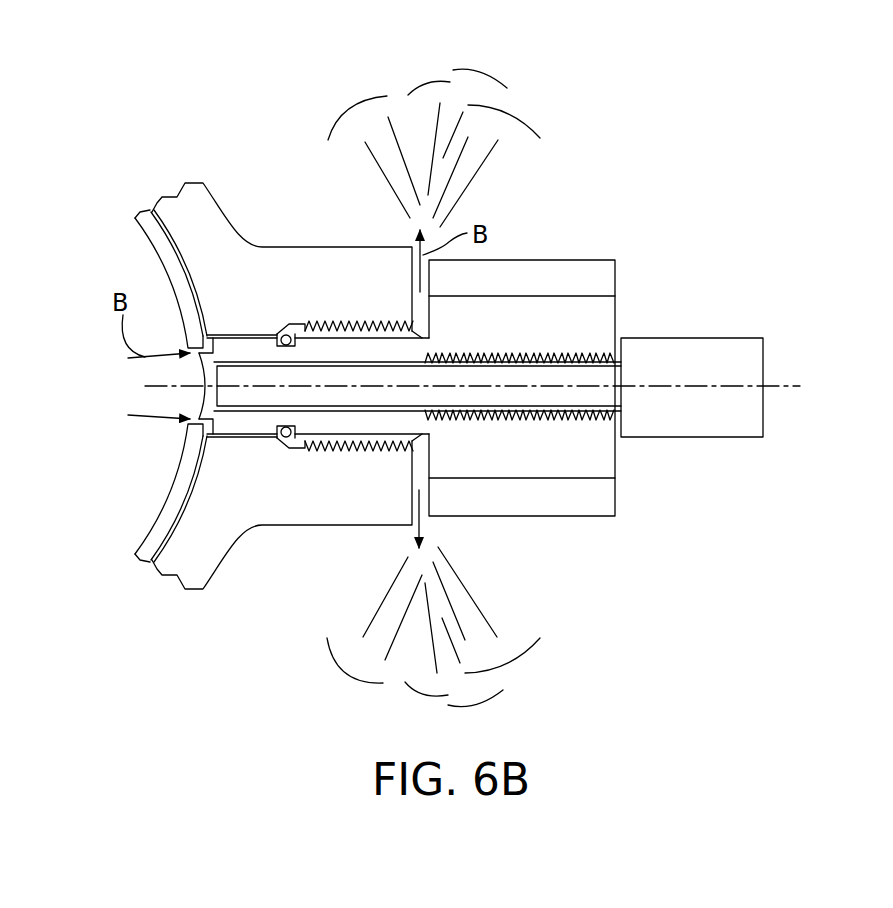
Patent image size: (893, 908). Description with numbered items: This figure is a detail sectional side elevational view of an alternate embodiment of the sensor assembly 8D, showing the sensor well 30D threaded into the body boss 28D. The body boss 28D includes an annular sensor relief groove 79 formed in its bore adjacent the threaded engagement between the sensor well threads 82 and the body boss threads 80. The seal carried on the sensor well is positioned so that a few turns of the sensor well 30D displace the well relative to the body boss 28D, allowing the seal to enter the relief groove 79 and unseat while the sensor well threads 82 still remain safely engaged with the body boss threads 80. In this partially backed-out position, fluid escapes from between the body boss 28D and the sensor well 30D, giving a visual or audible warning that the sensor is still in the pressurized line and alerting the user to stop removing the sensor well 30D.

The sensor assembly 8D is at (592, 234).
The body boss 28D is at (257, 527).
The sensor well 30D is at (594, 324).
The annular sensor relief groove 79 is at (303, 329).
The body boss threads 80 is at (372, 456).
The sensor well threads 82 is at (312, 444).